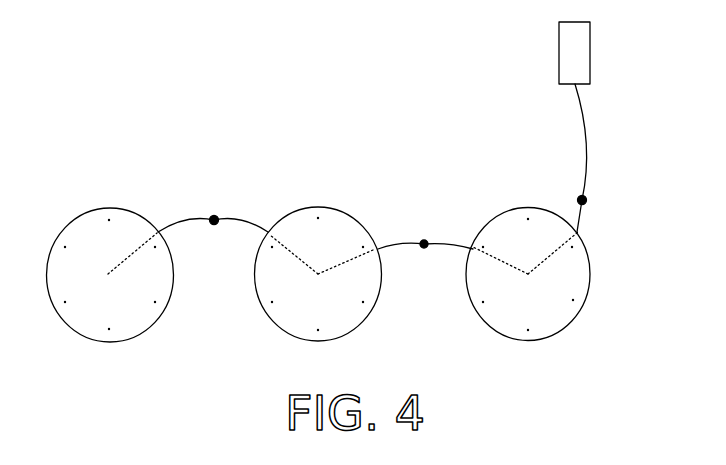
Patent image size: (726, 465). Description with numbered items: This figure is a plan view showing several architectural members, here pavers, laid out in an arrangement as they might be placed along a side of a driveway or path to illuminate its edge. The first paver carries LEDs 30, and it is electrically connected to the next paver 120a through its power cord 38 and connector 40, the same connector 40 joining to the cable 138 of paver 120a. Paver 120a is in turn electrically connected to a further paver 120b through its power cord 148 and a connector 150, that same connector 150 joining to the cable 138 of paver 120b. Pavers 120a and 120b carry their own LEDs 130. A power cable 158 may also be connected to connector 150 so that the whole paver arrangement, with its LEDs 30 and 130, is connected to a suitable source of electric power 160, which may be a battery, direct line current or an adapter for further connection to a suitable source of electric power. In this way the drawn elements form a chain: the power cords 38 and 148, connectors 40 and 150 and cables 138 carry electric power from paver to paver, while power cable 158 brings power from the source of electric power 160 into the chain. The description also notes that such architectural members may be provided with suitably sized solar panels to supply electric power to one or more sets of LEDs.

The LEDs 30 is at (65, 245).
The power cord 38 is at (198, 215).
The connector 40 is at (216, 208).
The cable 138 is at (227, 217).
The power cord 148 is at (407, 242).
The connector 150 is at (425, 232).
The LEDs 130 is at (318, 330).
The paver 120a is at (263, 283).
The paver 120b is at (510, 322).
The power cable 158 is at (588, 142).
The source of electric power 160 is at (580, 68).